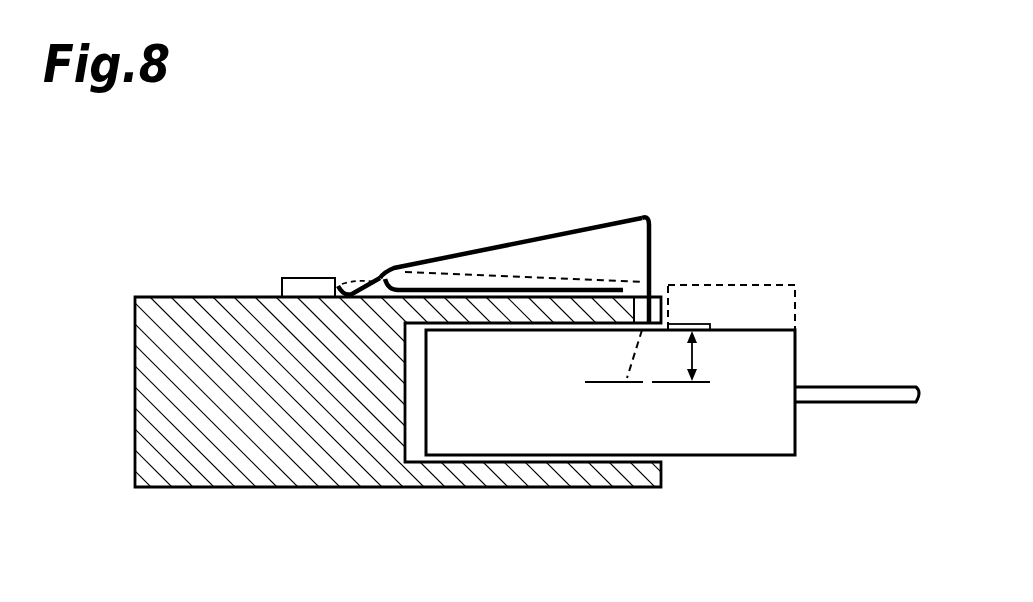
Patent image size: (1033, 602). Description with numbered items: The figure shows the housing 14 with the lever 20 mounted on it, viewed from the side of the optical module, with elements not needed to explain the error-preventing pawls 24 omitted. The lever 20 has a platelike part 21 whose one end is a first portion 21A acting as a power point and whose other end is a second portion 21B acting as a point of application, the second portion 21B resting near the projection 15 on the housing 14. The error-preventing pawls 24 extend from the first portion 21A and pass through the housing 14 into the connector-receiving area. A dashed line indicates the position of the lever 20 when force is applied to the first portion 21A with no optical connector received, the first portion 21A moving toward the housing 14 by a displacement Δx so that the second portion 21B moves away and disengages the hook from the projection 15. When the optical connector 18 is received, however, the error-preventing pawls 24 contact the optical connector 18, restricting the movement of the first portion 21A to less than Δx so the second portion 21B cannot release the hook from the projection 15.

The housing 14 is at (277, 482).
The projection 15 is at (292, 282).
The optical connector 18 is at (783, 362).
The lever 20 is at (525, 207).
The platelike part 21 is at (570, 228).
The first portion 21A is at (646, 216).
The second portion 21B is at (349, 282).
The error-preventing pawls 24 is at (652, 247).